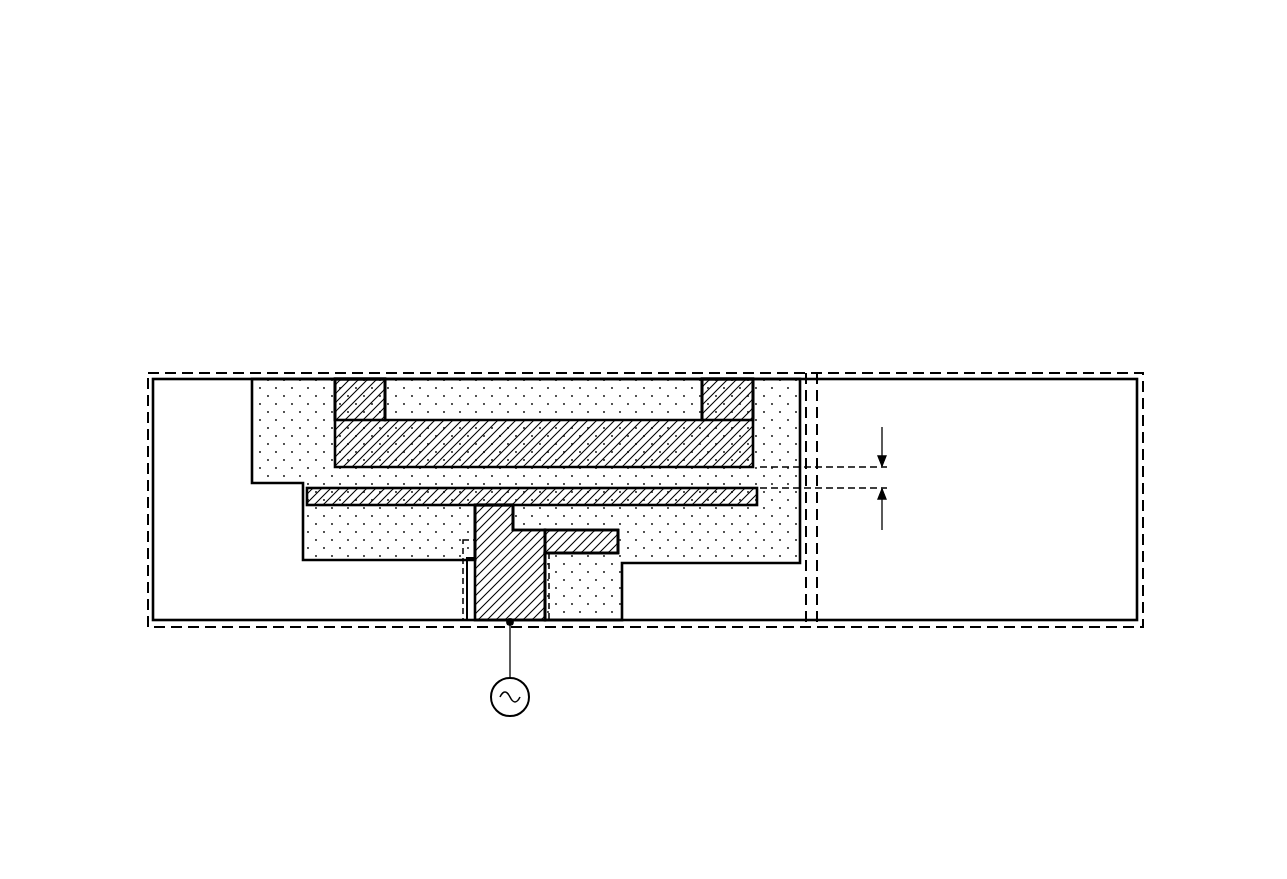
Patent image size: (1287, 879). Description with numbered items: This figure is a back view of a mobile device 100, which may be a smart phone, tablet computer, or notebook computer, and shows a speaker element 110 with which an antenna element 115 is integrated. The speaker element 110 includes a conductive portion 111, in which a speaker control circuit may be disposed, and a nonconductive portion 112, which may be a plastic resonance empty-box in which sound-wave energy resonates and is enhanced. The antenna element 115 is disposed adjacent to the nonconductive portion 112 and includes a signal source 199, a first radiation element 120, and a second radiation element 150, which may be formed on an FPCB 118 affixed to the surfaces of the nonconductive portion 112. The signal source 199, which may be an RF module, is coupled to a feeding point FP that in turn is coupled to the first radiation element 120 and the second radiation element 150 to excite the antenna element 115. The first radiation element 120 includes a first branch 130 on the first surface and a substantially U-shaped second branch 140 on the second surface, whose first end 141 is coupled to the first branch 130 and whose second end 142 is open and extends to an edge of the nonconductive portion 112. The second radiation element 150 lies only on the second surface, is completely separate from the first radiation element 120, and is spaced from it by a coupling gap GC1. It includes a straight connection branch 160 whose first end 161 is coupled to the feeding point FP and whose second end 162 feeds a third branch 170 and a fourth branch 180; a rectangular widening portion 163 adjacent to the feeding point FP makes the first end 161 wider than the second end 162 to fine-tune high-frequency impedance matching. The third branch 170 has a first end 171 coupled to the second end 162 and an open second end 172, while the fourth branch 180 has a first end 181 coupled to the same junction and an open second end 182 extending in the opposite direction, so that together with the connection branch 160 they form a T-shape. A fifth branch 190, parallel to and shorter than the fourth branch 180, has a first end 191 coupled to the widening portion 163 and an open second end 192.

The mobile device 100 is at (92, 118).
The speaker element 110 is at (810, 373).
The conductive portion 111 is at (1049, 373).
The nonconductive portion 112 is at (177, 373).
The antenna element 115 is at (915, 85).
The FPCB 118 is at (252, 432).
The first radiation element 120 is at (1067, 170).
The first branch 130 is at (1090, 106).
The second branch 140 is at (530, 430).
The first end of the second branch 141 is at (727, 395).
The second end of the second branch 142 is at (357, 393).
The second radiation element 150 is at (1216, 85).
The connection branch 160 is at (548, 573).
The first end of the connection branch 161 is at (548, 582).
The second end of the connection branch 162 is at (470, 535).
The widening portion 163 is at (463, 588).
The third branch 170 is at (402, 492).
The first end of the third branch 171 is at (497, 497).
The second end of the third branch 172 is at (306, 500).
The fourth branch 180 is at (630, 473).
The first end of the fourth branch 181 is at (515, 478).
The second end of the fourth branch 182 is at (762, 497).
The fifth branch 190 is at (585, 542).
The first end of the fifth branch 191 is at (562, 528).
The second end of the fifth branch 192 is at (620, 542).
The signal source 199 is at (529, 697).
The coupling gap GC1 is at (854, 478).
The feeding point FP is at (512, 624).